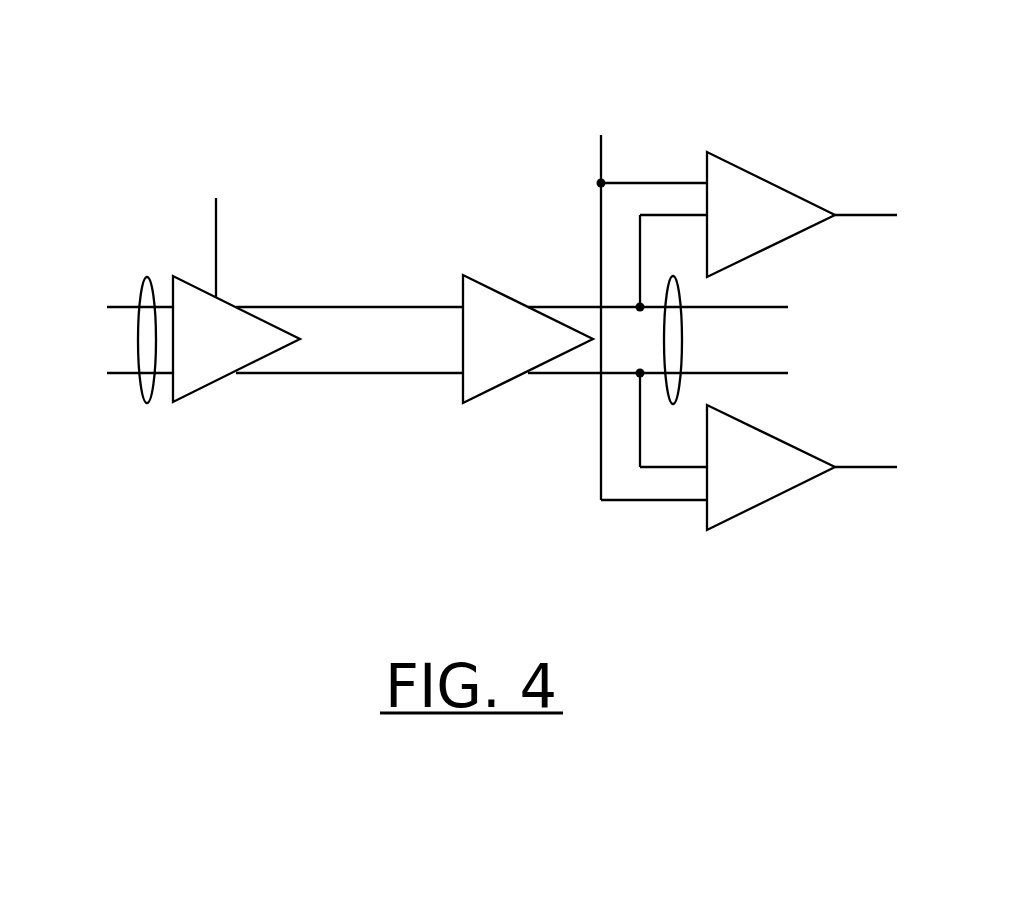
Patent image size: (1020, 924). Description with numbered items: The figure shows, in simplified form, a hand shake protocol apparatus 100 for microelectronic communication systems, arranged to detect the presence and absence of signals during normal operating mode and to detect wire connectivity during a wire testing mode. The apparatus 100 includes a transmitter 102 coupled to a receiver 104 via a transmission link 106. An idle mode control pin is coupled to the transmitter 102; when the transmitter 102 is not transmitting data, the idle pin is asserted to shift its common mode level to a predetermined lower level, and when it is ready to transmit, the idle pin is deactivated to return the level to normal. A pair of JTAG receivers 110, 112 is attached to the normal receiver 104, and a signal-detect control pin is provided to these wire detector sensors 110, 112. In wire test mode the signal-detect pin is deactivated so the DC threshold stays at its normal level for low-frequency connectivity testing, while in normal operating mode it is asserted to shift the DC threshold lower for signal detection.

The hand shake protocol apparatus 100 is at (468, 68).
The transmitter 102 is at (236, 282).
The receiver 104 is at (528, 339).
The transmission link 106 is at (323, 302).
The JTAG receiver 110 is at (747, 187).
The JTAG receiver 112 is at (745, 443).